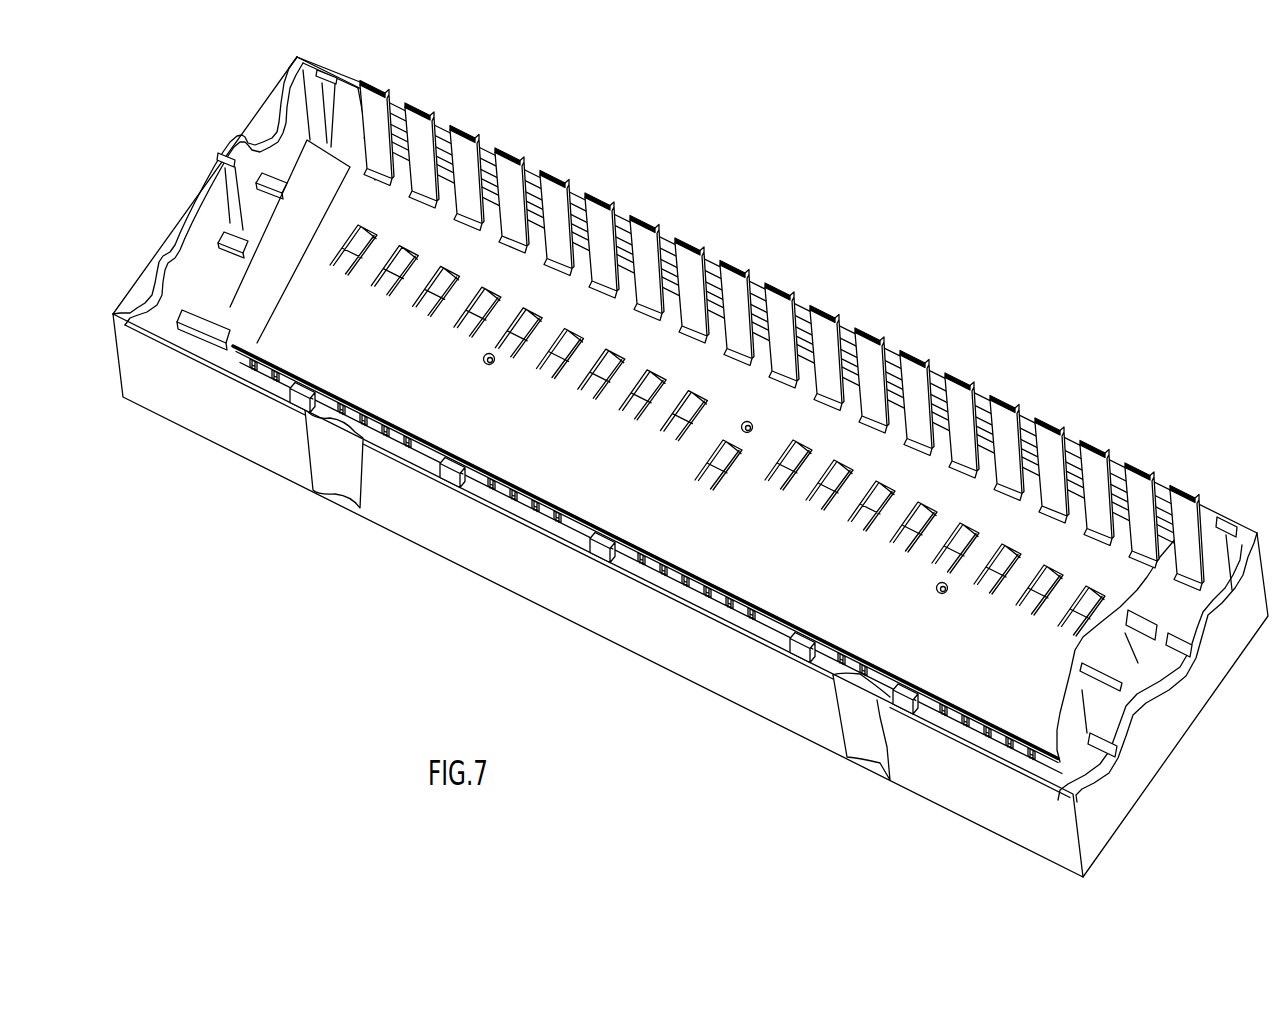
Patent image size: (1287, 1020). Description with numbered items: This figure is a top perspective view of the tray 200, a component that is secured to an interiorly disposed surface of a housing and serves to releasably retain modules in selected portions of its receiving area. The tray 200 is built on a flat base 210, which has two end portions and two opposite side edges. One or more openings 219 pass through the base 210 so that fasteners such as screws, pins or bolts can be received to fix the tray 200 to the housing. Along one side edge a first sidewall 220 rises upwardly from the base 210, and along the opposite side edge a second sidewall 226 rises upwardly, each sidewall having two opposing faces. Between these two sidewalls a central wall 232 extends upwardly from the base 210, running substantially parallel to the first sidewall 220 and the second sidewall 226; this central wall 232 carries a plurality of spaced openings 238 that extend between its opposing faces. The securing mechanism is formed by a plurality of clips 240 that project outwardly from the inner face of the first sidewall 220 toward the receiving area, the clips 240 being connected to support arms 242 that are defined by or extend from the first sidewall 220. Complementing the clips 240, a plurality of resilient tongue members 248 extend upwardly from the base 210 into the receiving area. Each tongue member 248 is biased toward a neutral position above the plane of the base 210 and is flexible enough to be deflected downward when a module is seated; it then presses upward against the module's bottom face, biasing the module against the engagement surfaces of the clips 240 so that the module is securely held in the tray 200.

The tray 200 is at (1016, 221).
The base 210 is at (640, 488).
The openings 219 is at (489, 364).
The first sidewall 220 is at (960, 430).
The second sidewall 226 is at (743, 681).
The central wall 232 is at (781, 612).
The spaced openings 238 is at (370, 438).
The clips 240 is at (600, 202).
The support arms 242 is at (505, 178).
The resilient tongue members 248 is at (355, 234).